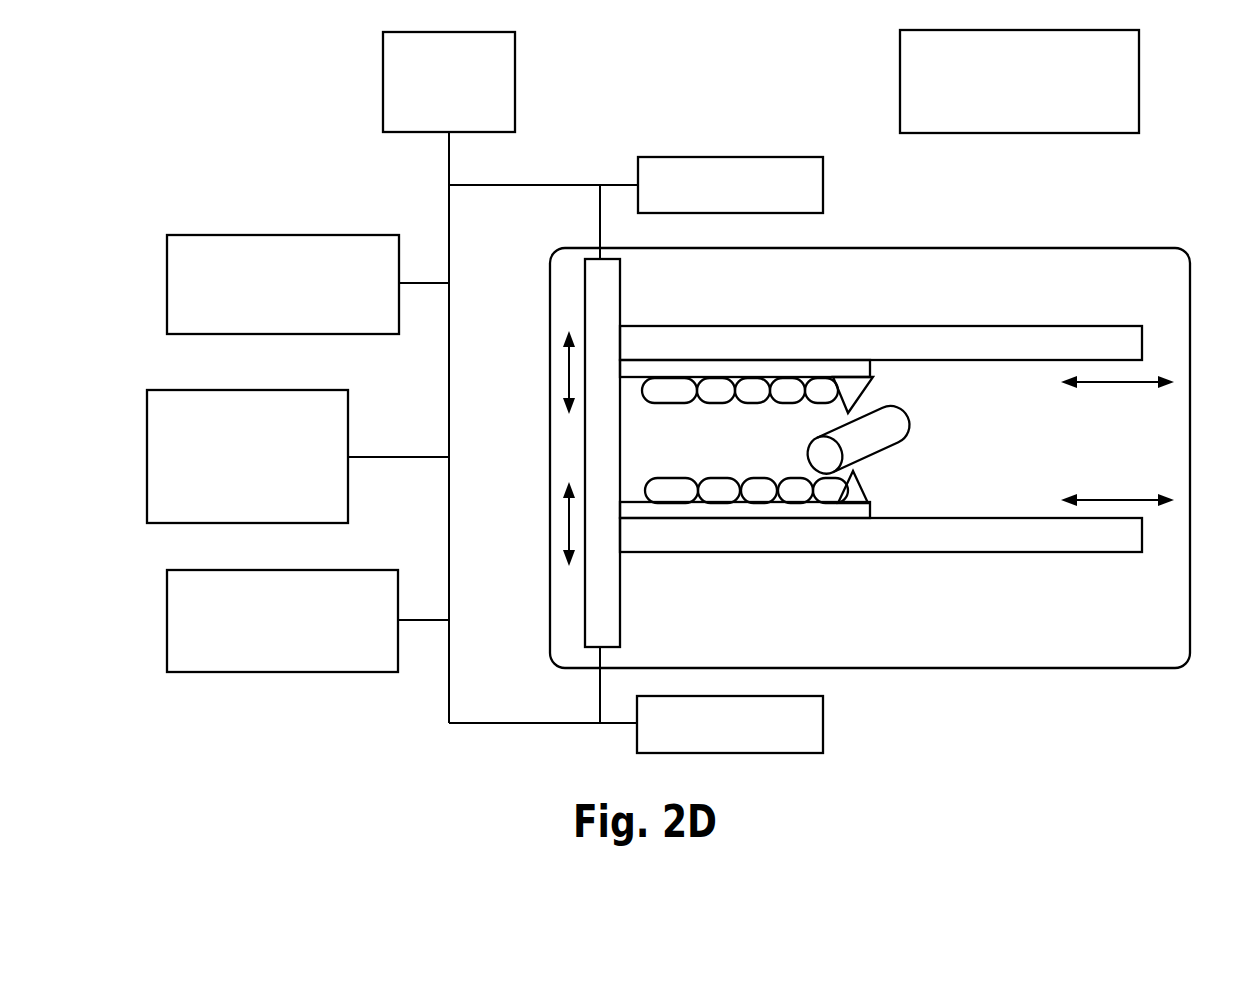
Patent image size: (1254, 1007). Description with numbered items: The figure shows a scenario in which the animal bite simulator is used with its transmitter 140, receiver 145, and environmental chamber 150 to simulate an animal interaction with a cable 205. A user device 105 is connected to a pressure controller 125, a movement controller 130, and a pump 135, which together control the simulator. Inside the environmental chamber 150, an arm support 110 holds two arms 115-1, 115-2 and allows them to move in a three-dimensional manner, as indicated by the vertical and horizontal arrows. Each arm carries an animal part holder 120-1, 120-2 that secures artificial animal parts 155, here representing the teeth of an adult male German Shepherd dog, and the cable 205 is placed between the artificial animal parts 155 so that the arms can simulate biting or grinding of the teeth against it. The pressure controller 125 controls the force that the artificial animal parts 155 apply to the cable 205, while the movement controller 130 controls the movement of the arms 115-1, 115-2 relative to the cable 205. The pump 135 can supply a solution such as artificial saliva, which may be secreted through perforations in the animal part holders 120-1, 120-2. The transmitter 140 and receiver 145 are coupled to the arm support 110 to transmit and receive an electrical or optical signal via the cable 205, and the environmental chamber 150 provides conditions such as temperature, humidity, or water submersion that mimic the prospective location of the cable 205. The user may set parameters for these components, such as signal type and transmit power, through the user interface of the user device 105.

The user device 105 is at (298, 456).
The arm support 110 is at (622, 615).
The arm 115-1 is at (880, 326).
The arm 115-2 is at (878, 553).
The animal part holder 120-1 is at (872, 366).
The animal part holder 120-2 is at (872, 503).
The pressure controller 125 is at (308, 284).
The movement controller 130 is at (308, 621).
The pump 135 is at (449, 82).
The transmitter 140 is at (730, 185).
The receiver 145 is at (730, 724).
The environmental chamber 150 is at (1187, 252).
The artificial animal parts 155 is at (650, 455).
The cable 205 is at (856, 455).